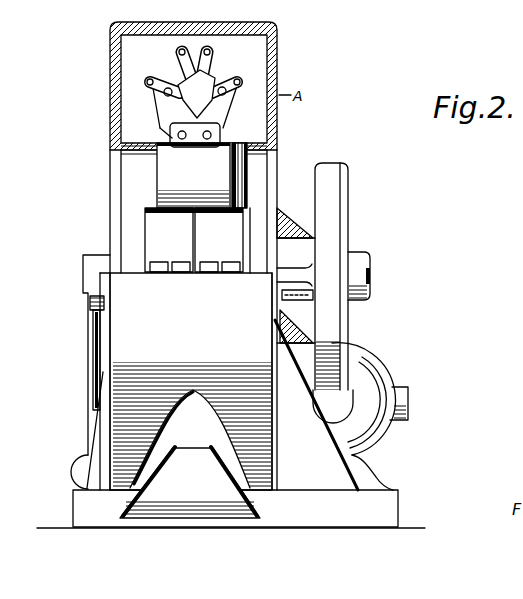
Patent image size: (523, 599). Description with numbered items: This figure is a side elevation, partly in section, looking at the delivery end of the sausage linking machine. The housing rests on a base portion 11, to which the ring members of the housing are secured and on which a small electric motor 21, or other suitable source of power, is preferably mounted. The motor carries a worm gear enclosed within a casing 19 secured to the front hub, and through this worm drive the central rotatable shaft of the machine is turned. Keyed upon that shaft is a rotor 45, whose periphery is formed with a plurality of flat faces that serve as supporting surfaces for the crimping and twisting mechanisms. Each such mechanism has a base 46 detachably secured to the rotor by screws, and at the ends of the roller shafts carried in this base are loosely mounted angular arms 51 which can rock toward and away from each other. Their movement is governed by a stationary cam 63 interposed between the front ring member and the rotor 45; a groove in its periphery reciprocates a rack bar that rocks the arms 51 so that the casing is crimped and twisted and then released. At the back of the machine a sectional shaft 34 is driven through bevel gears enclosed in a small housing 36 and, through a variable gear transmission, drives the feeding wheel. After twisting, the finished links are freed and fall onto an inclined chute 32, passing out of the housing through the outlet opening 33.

The base portion 11 is at (387, 498).
The casing 19 is at (337, 205).
The small electric motor 21 is at (370, 382).
The chute 32 is at (198, 508).
The outlet opening 33 is at (196, 393).
The sectional shaft 34 is at (90, 357).
The small housing 36 is at (83, 280).
The rotor 45 is at (170, 178).
The base 46 is at (172, 138).
The angular arm 51 is at (147, 86).
The stationary cam 63 is at (237, 173).